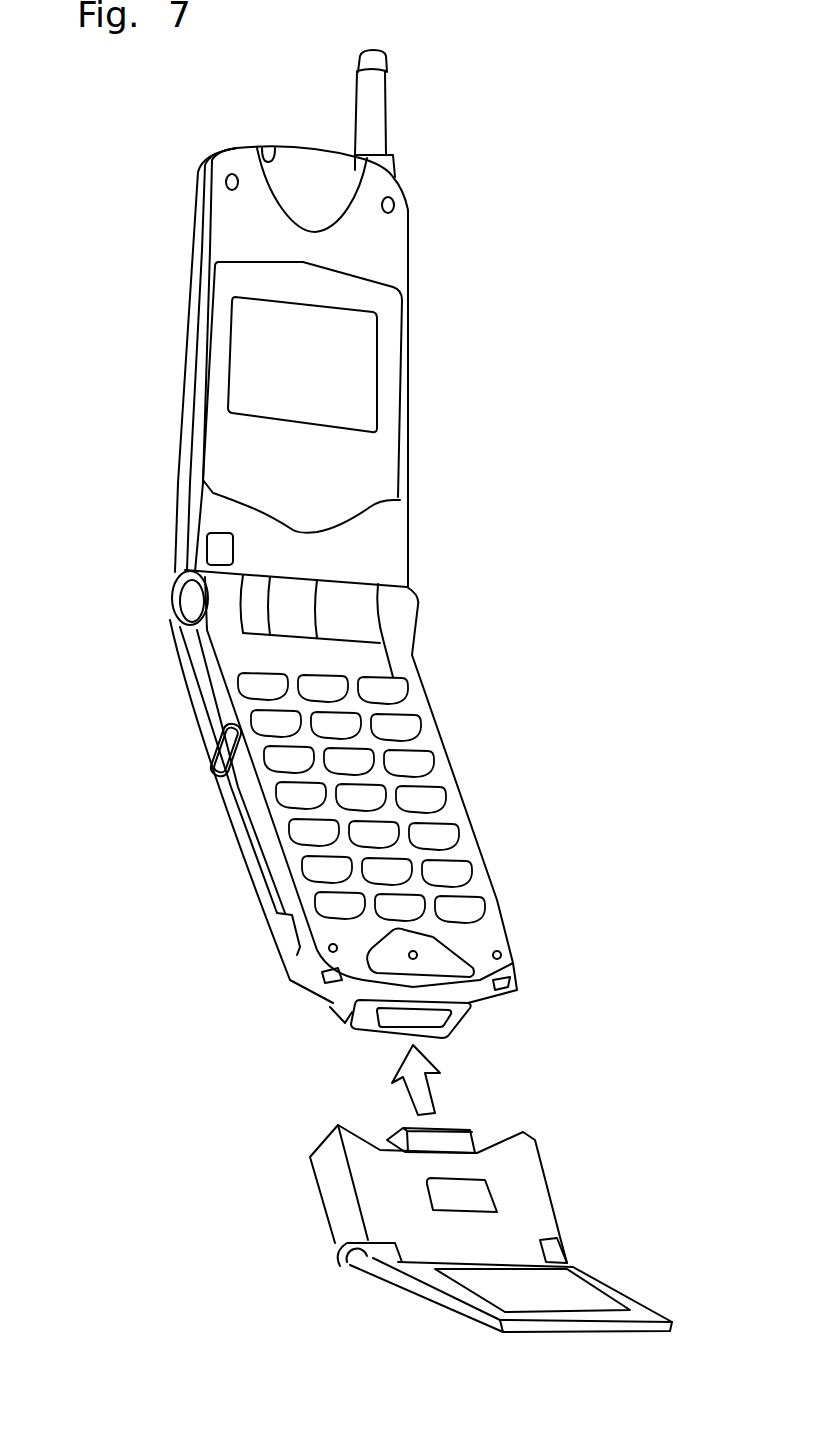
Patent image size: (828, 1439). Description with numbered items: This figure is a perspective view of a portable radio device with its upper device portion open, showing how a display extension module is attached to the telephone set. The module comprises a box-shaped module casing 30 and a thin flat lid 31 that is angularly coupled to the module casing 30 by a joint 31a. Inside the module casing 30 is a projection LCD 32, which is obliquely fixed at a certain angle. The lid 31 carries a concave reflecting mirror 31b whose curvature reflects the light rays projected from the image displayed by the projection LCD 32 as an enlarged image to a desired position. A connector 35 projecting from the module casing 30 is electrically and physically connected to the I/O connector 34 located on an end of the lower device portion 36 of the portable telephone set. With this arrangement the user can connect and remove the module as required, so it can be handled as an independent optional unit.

The module casing 30 is at (530, 1172).
The thin flat lid 31 is at (420, 1290).
The joint 31a is at (360, 1262).
The concave reflecting mirror 31b is at (555, 1283).
The projection LCD 32 is at (477, 1193).
The I/O connector 34 is at (373, 1023).
The connector 35 is at (477, 1137).
The lower device portion 36 is at (435, 732).